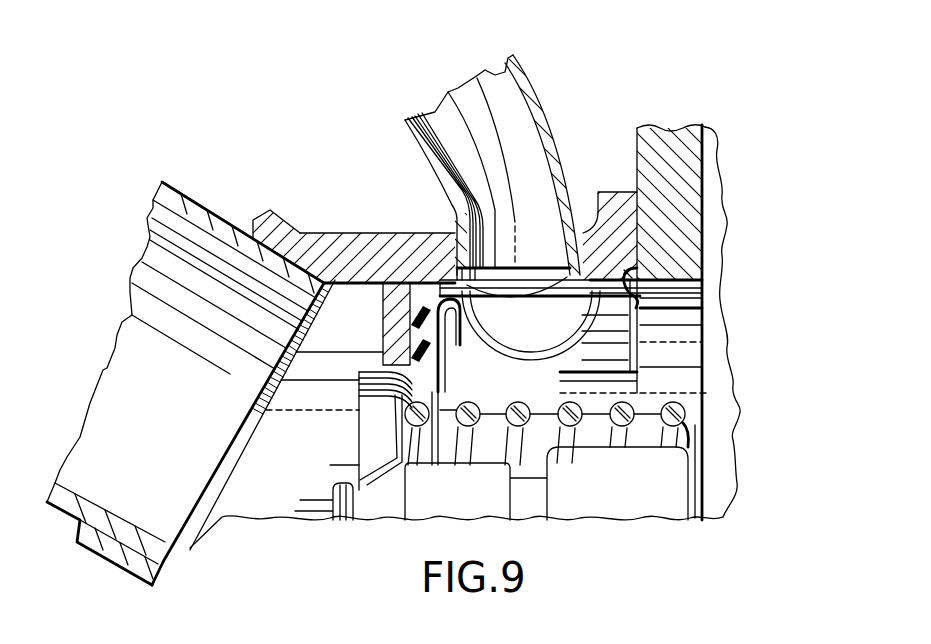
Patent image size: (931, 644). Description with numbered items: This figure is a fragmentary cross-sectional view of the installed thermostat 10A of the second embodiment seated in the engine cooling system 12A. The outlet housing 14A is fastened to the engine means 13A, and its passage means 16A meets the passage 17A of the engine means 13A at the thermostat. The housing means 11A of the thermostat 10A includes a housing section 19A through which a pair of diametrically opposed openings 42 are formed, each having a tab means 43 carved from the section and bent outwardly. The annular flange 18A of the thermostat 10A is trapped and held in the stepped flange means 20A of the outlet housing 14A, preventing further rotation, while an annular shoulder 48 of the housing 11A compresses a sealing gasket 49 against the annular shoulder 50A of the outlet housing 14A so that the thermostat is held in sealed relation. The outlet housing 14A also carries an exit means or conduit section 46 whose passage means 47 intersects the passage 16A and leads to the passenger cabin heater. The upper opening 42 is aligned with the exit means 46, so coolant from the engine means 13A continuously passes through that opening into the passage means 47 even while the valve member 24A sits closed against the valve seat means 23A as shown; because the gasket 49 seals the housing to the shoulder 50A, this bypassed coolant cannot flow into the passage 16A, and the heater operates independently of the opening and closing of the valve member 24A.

The thermostat 10A is at (648, 338).
The housing means 11A is at (397, 375).
The engine cooling system 12A is at (752, 196).
The engine means 13A is at (688, 237).
The outlet housing 14A is at (362, 232).
The passage means 16A is at (348, 258).
The passage 17A is at (670, 300).
The annular flange 18A is at (640, 257).
The housing section 19A is at (603, 270).
The stepped flange means 20A is at (633, 217).
The valve seat means 23A is at (450, 367).
The valve member 24A is at (395, 423).
The opening 42 is at (562, 275).
The tab means 43 is at (437, 265).
The exit means 46 is at (532, 87).
The passage means 47 is at (503, 70).
The annular shoulder 48 is at (428, 327).
The sealing gasket 49 is at (418, 275).
The annular shoulder 50A is at (410, 300).